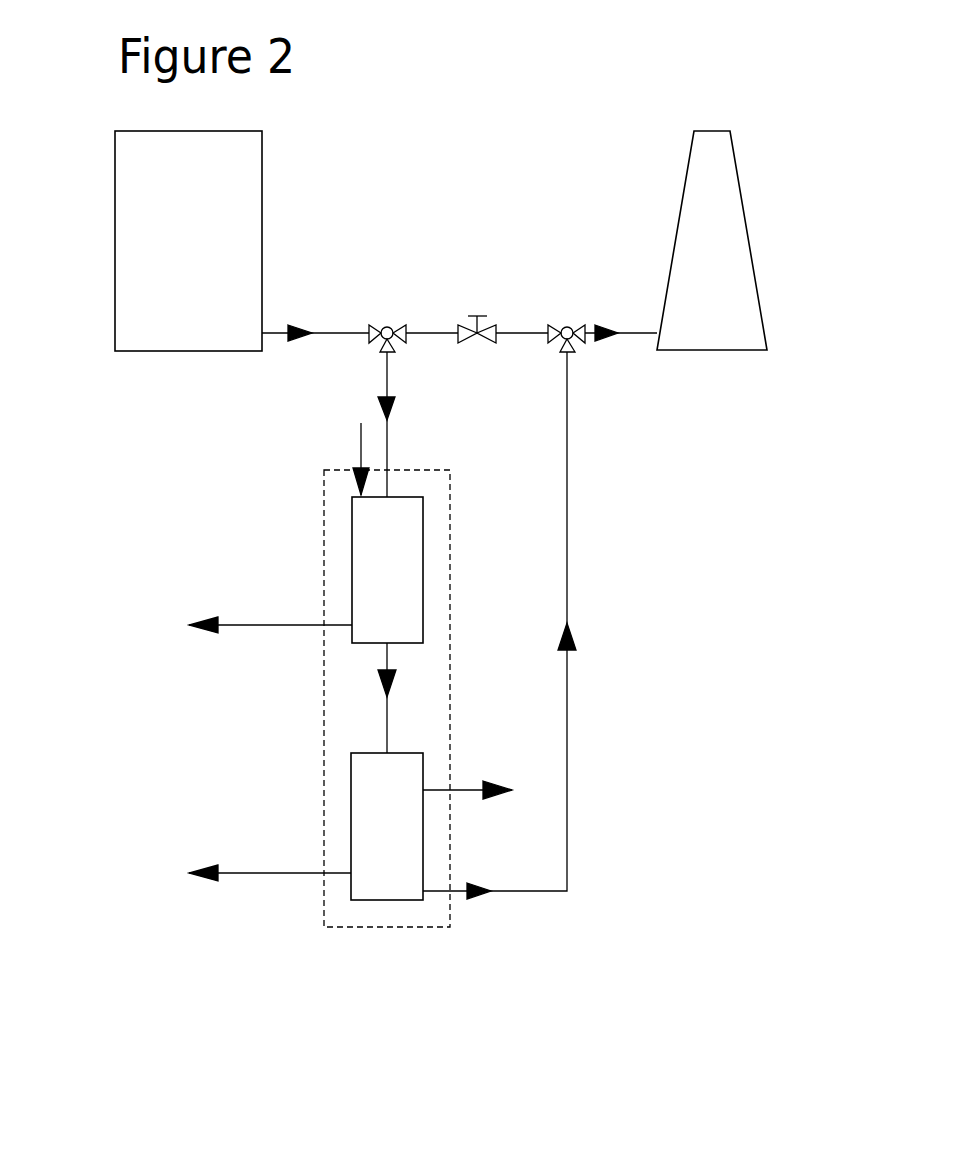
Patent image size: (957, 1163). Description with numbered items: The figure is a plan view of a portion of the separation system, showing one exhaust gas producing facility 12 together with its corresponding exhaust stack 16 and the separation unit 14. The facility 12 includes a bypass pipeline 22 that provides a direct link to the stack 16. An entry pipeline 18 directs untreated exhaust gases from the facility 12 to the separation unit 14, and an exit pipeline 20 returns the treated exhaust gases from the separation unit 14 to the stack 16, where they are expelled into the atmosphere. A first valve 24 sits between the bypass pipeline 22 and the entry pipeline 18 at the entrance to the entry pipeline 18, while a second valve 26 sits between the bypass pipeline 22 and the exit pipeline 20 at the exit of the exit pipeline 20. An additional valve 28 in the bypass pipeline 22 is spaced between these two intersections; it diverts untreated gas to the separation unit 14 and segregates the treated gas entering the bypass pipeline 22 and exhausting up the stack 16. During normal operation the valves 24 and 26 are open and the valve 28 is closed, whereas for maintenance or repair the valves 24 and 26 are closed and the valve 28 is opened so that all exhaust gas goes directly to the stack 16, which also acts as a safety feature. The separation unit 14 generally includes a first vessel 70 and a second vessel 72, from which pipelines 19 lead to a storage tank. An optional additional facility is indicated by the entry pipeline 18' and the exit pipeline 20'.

The exhaust gas producing facility 12 is at (188, 241).
The exhaust stack 16 is at (712, 240).
The bypass pipeline 22 is at (333, 336).
The first valve 24 is at (401, 322).
The additional valve 28 is at (503, 323).
The second valve 26 is at (553, 323).
The entry pipeline 18 is at (260, 424).
The entry pipeline from additional facility 18' is at (288, 481).
The separation unit 14 is at (407, 930).
The first vessel 70 is at (387, 625).
The second vessel 72 is at (387, 826).
The pipeline to storage tank 19 is at (273, 627).
The additional exit pipeline 20' is at (563, 743).
The exit pipeline 20 is at (575, 625).